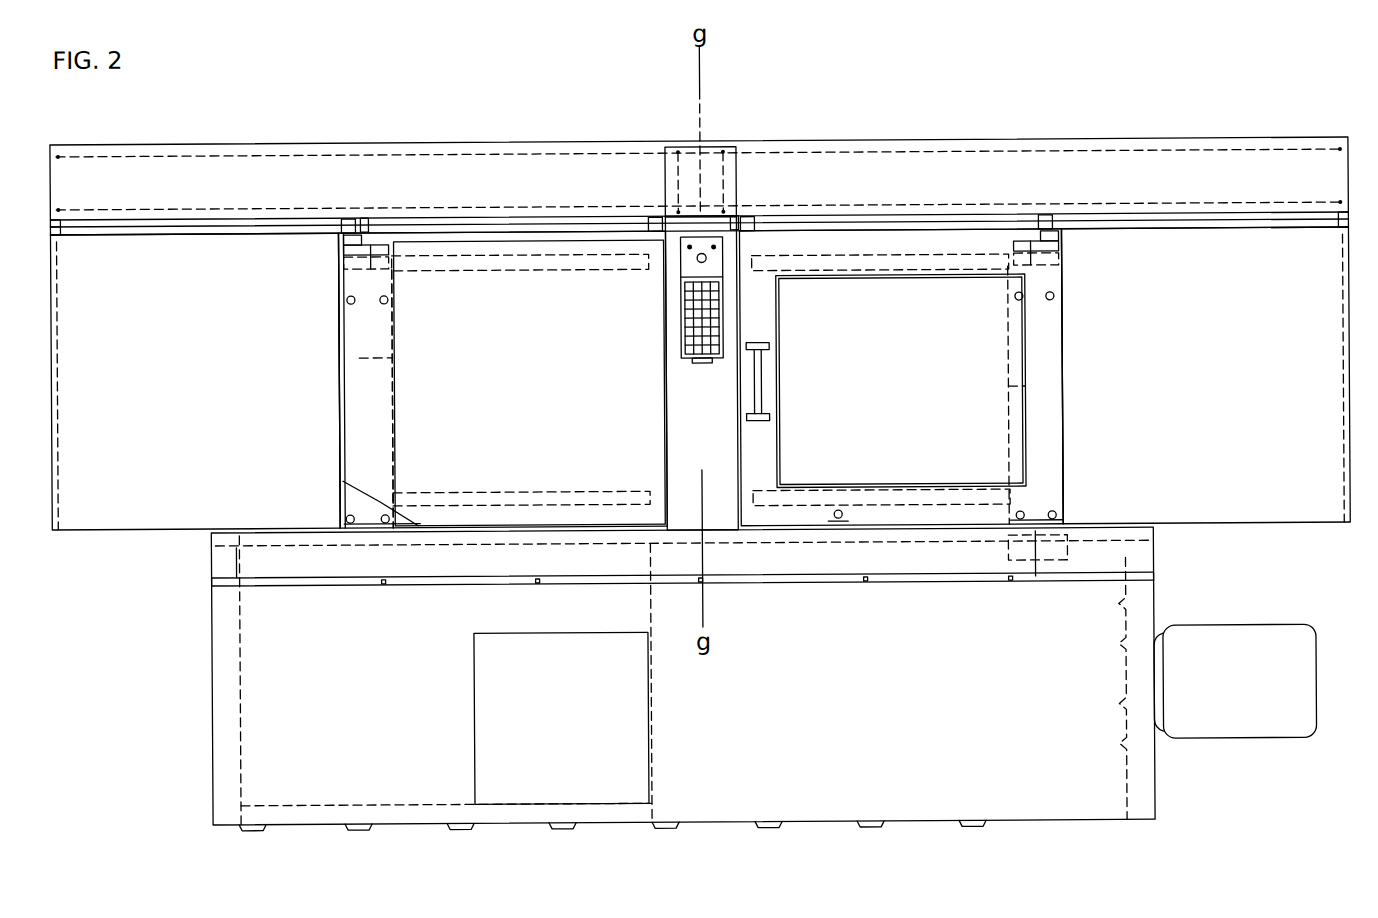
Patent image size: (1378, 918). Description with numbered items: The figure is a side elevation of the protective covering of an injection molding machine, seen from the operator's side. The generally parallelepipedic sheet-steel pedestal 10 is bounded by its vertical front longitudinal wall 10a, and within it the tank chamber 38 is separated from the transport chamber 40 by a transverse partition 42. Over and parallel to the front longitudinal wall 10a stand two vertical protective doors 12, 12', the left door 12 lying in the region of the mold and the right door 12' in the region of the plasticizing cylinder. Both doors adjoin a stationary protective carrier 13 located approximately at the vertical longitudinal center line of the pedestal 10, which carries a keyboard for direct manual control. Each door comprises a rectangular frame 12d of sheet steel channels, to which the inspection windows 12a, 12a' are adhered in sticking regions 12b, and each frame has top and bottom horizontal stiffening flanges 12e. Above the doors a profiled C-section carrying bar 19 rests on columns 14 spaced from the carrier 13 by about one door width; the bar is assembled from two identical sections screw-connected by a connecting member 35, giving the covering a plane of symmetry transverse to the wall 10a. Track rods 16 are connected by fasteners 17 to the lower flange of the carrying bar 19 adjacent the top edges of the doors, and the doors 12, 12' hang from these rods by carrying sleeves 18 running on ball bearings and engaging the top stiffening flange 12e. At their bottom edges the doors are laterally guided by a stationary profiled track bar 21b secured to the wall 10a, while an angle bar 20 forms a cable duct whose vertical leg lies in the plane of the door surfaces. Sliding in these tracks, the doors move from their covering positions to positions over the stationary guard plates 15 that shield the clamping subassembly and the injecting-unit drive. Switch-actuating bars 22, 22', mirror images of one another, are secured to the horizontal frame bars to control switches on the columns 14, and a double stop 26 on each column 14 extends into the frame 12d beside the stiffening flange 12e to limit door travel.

The pedestal 10 is at (625, 676).
The front longitudinal wall 10a is at (613, 829).
The protective door 12 is at (445, 380).
The protective door 12' is at (958, 377).
The inspection window 12a is at (530, 383).
The inspection window 12a' is at (901, 381).
The sticking regions 12b is at (690, 397).
The rectangular frame 12d is at (289, 381).
The horizontal stiffening flange 12e is at (689, 378).
The stationary protective carrier 13 is at (720, 435).
The columns 14 is at (692, 361).
The stationary guard plates 15 is at (700, 430).
The track rods 16 is at (699, 276).
The fasteners 17 is at (698, 150).
The carrying sleeves 18 is at (663, 153).
The profiled carrying bar 19 is at (698, 132).
The angle bar 20 is at (641, 617).
The stationary profiled track bar 21b is at (690, 589).
The switch-actuating bar 22 is at (521, 380).
The switch-actuating bar 22' is at (881, 380).
The double stop 26 is at (704, 274).
The connecting member 35 is at (702, 143).
The tank chamber 38 is at (767, 729).
The transport chamber 40 is at (352, 731).
The transverse partition 42 is at (652, 747).